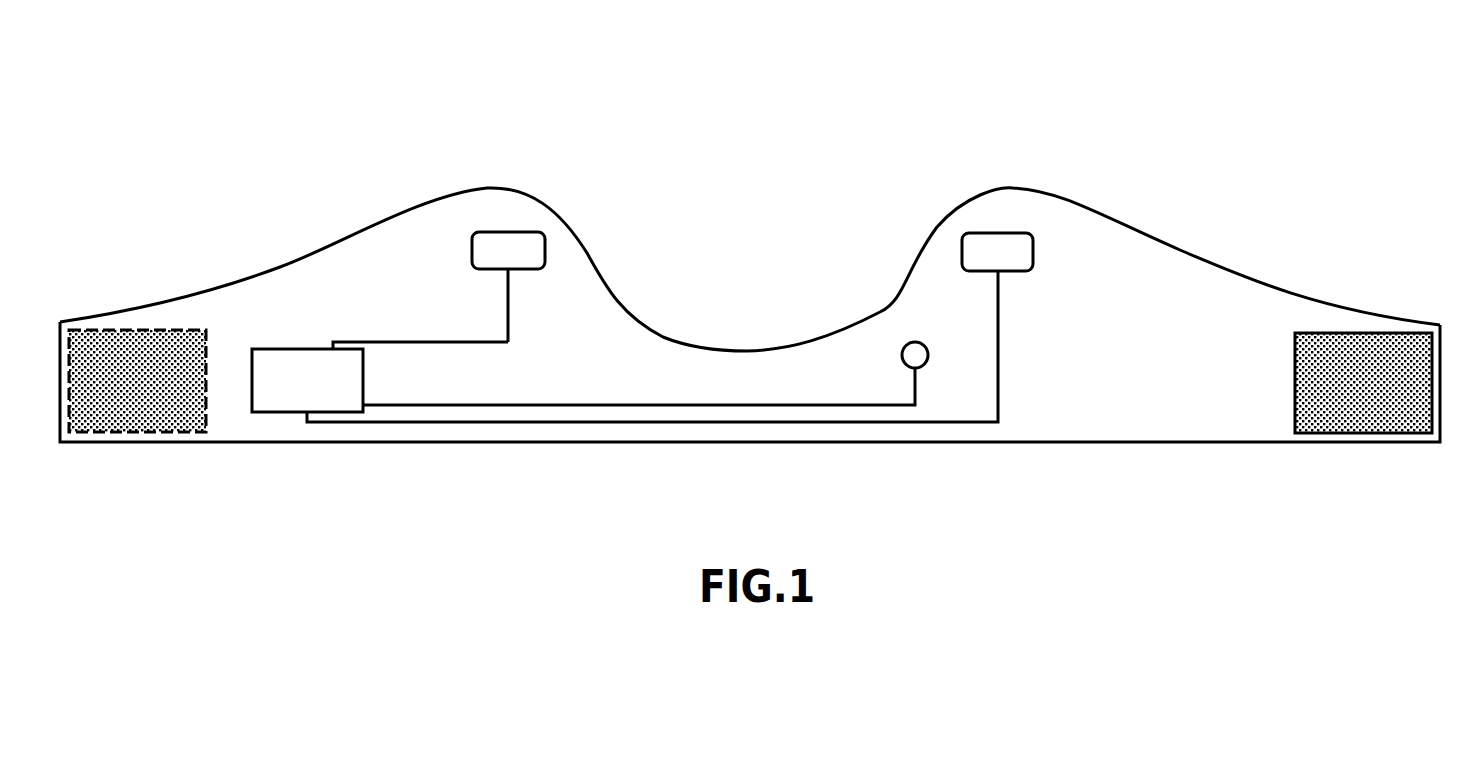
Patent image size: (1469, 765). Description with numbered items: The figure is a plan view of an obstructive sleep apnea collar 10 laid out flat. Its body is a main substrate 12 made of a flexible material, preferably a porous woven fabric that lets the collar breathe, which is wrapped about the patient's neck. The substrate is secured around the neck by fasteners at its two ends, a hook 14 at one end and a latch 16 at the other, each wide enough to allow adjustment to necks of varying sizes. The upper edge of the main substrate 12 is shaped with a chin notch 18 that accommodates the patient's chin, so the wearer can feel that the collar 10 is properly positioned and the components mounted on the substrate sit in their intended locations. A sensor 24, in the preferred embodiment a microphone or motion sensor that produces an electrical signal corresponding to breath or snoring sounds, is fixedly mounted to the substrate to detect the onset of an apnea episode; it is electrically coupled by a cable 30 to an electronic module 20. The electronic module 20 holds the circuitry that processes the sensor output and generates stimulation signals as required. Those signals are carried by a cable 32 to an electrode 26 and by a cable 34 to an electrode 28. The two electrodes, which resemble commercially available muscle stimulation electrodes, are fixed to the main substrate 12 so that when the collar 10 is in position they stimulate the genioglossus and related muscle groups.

The obstructive sleep apnea collar 10 is at (1185, 158).
The main substrate 12 is at (1167, 362).
The hook 14 is at (1387, 343).
The latch 16 is at (125, 338).
The chin notch 18 is at (725, 342).
The electronic module 20 is at (307, 359).
The sensor 24 is at (918, 368).
The electrode 26 is at (517, 243).
The electrode 28 is at (988, 243).
The cable 30 is at (788, 405).
The cable 32 is at (435, 335).
The cable 34 is at (852, 425).